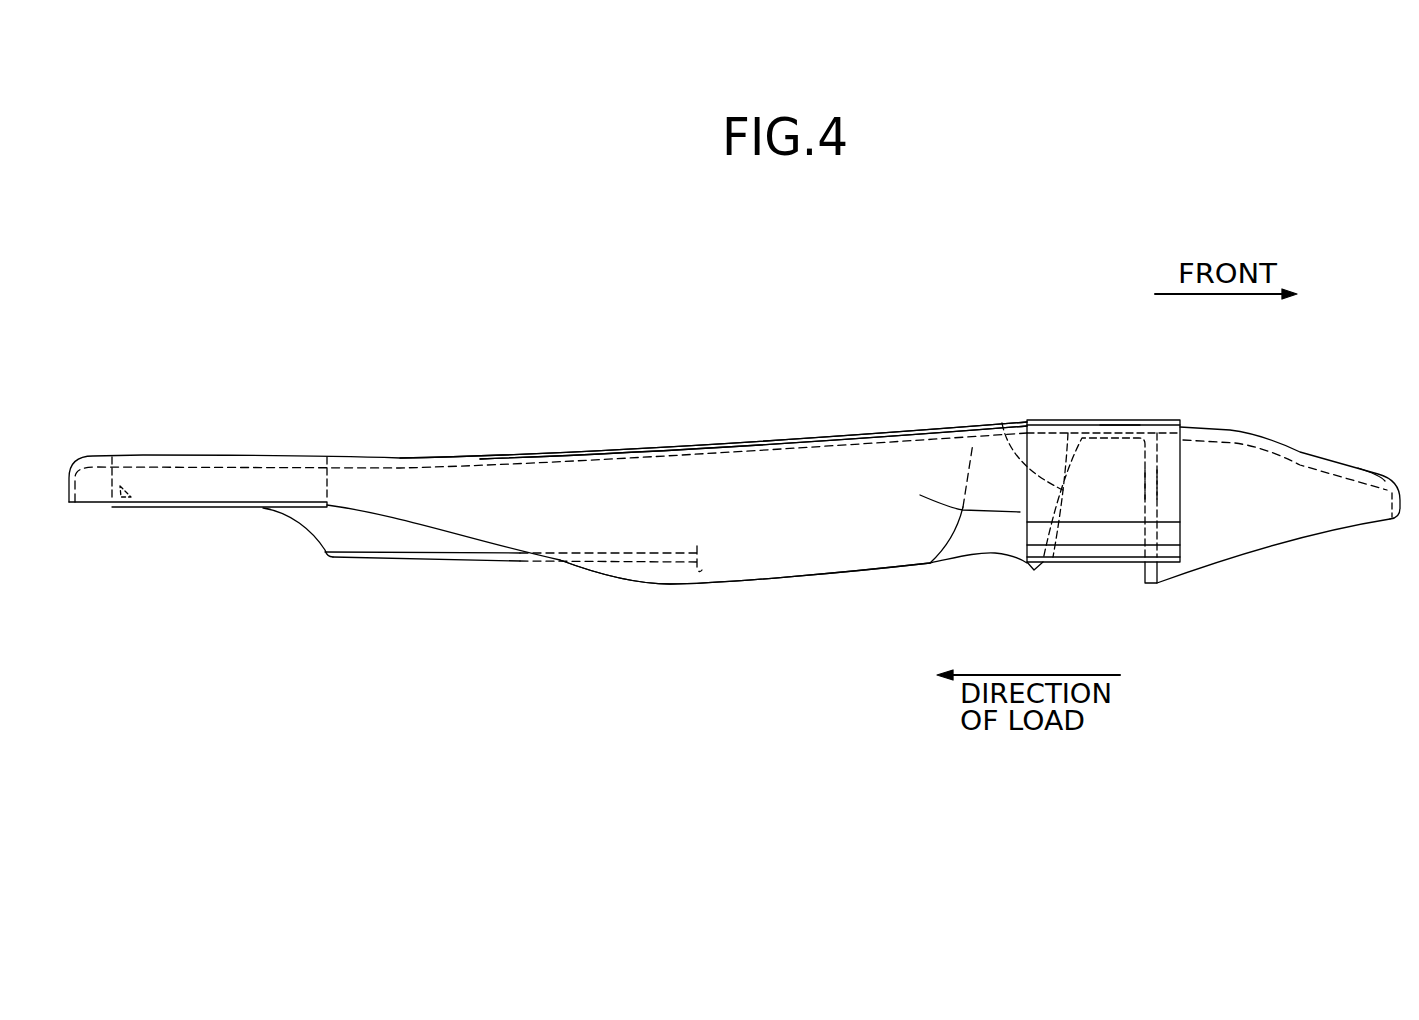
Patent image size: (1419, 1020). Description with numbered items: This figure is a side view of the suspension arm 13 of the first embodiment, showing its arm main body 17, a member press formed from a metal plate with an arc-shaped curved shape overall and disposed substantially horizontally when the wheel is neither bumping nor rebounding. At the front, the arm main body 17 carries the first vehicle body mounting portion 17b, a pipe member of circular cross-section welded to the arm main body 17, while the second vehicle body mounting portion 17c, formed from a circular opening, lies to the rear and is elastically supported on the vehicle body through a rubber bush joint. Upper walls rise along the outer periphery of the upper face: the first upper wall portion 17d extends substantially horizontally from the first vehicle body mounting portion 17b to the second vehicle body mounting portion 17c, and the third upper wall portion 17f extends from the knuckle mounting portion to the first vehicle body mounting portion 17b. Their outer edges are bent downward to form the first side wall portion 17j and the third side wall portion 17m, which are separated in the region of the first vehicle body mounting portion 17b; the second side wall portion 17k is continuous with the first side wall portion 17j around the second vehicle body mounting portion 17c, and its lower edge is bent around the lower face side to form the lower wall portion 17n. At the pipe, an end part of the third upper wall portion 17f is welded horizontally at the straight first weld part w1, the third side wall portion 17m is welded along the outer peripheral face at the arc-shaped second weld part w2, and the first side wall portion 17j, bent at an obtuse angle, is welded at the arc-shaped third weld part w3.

The suspension arm 13 is at (888, 392).
The arm main body 17 is at (787, 437).
The first vehicle body mounting portion 17b is at (1167, 420).
The second vehicle body mounting portion 17c is at (137, 510).
The first upper wall portion 17d is at (617, 448).
The third upper wall portion 17f is at (1282, 442).
The first side wall portion 17j is at (742, 540).
The second side wall portion 17k is at (330, 532).
The third side wall portion 17m is at (1280, 540).
The lower wall portion 17n is at (405, 562).
The first weld part w1 is at (1118, 420).
The second weld part w2 is at (1153, 487).
The third weld part w3 is at (1002, 423).